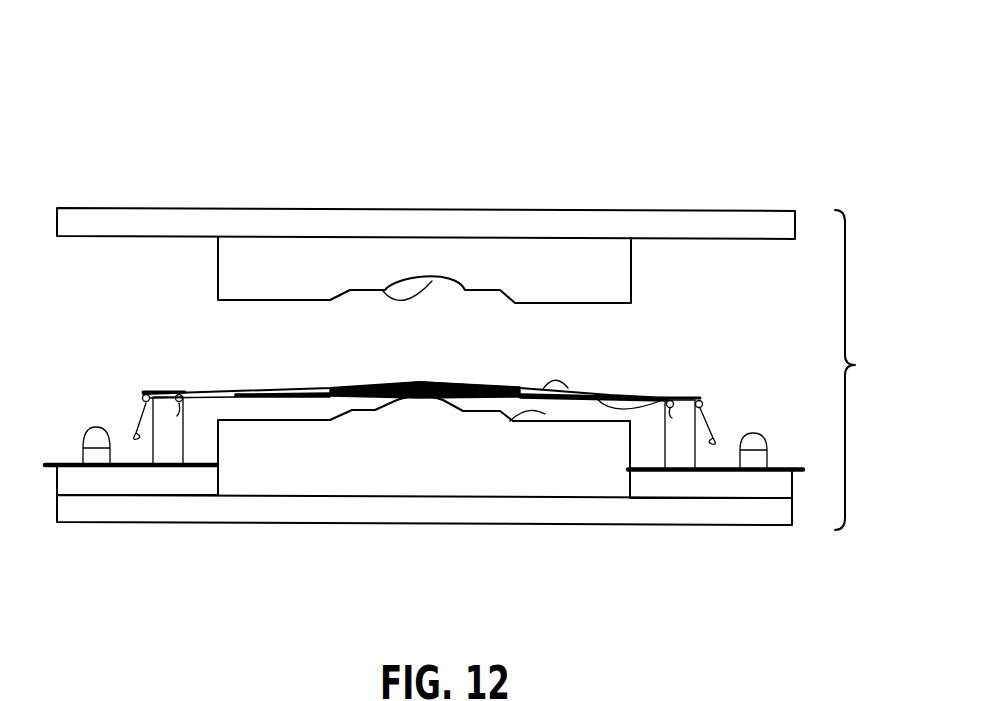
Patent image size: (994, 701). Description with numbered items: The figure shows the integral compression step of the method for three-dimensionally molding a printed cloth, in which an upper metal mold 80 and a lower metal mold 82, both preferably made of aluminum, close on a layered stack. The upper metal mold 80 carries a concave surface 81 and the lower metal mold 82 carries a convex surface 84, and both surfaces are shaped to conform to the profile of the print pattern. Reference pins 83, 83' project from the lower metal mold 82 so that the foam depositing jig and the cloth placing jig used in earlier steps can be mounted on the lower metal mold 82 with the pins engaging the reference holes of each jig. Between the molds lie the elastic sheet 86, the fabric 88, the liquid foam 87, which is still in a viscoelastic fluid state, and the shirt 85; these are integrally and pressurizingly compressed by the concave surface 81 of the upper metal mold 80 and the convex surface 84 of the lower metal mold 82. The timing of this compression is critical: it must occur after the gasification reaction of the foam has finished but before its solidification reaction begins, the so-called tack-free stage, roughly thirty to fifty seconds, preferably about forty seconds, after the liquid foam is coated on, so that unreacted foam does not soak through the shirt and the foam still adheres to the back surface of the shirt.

The upper metal mold 80 is at (612, 122).
The concave surface 81 is at (383, 291).
The lower metal mold 82 is at (195, 570).
The reference pin 83 is at (781, 425).
The reference pin 83' is at (76, 386).
The convex surface 84 is at (543, 425).
The shirt 85 is at (598, 388).
The elastic sheet 86 is at (672, 400).
The liquid foam 87 is at (402, 384).
The fabric 88 is at (573, 400).